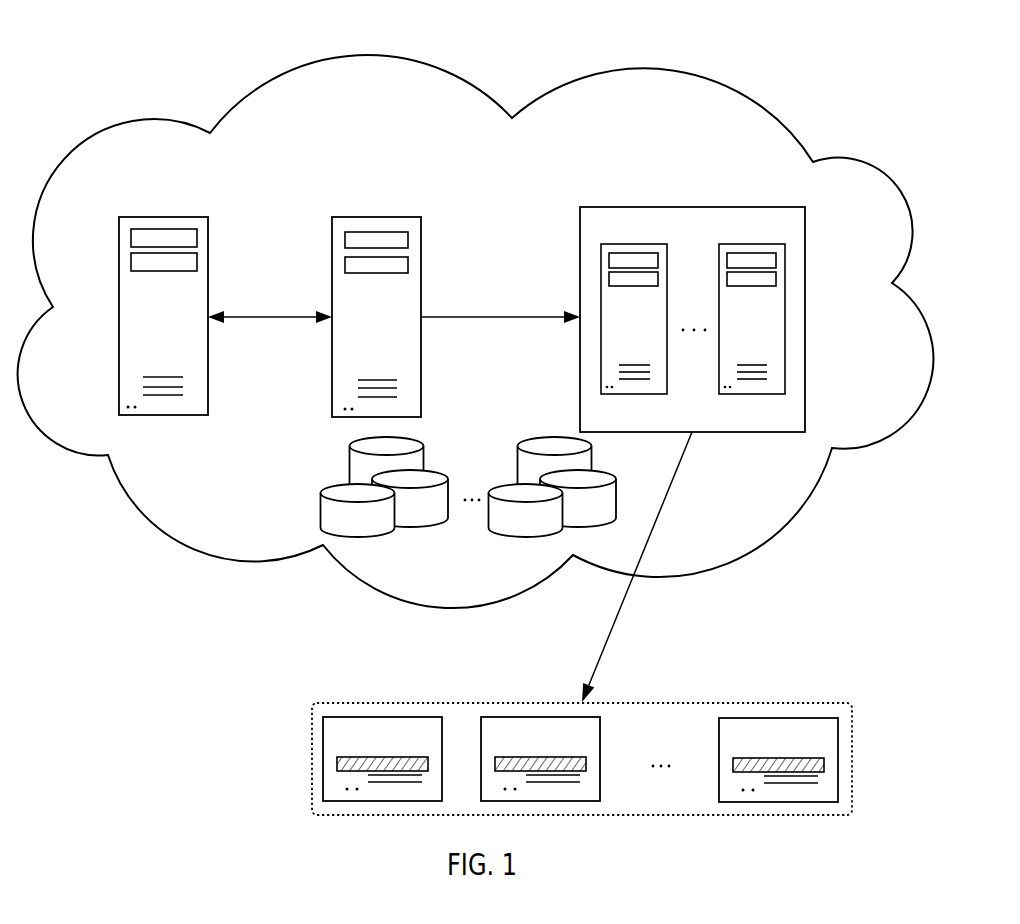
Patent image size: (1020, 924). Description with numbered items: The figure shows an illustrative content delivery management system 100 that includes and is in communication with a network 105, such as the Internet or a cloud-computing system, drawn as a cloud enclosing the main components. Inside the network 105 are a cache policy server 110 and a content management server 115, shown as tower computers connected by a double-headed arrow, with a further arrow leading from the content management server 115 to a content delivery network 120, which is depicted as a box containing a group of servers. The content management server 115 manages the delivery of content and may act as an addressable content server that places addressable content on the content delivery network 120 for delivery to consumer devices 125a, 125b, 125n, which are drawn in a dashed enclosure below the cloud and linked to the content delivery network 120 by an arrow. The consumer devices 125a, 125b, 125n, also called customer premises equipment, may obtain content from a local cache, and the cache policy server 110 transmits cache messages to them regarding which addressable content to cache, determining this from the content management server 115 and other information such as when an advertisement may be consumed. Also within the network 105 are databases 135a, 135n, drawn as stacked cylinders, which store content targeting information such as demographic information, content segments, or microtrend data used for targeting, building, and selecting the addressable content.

The system 100 is at (714, 53).
The network 105 is at (461, 142).
The cache policy server 110 is at (148, 328).
The content management server 115 is at (362, 328).
The content delivery network 120 is at (679, 236).
The consumer device 125a is at (363, 749).
The consumer device 125b is at (521, 749).
The consumer device 125n is at (760, 750).
The database 135a is at (340, 525).
The database 135n is at (508, 525).